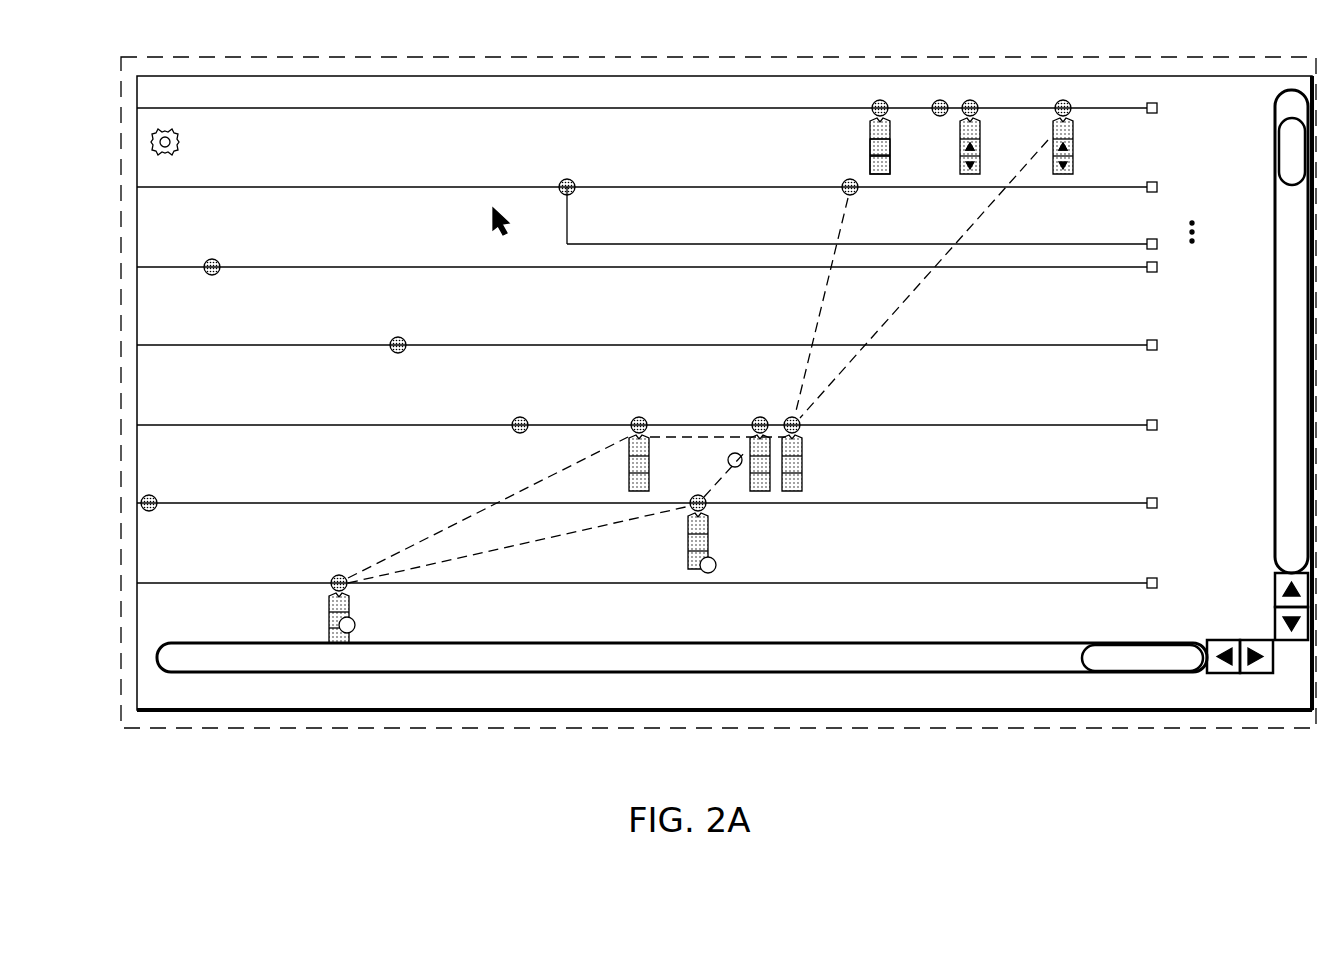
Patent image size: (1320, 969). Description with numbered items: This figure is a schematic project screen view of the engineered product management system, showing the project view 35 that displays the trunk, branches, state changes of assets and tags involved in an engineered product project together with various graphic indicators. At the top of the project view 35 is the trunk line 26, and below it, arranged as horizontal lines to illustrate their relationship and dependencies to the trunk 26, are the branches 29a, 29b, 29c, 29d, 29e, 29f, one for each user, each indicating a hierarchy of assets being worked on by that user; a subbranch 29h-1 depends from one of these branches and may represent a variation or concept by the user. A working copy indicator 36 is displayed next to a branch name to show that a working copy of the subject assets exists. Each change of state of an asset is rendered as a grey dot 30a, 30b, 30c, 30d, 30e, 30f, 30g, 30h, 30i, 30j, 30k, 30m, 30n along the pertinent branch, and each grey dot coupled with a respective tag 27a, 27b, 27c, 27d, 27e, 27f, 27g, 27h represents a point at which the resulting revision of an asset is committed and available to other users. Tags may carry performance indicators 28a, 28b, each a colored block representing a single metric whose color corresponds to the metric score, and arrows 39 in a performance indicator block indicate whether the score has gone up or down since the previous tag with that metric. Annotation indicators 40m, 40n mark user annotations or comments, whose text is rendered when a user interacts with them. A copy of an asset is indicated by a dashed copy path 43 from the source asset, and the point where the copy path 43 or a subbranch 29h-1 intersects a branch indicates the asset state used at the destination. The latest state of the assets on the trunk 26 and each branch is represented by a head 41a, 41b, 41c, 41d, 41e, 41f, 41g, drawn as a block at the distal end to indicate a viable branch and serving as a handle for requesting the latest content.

The trunk 26 is at (137, 108).
The tag 27a is at (869, 124).
The tag 27b is at (960, 126).
The tag 27c is at (1074, 136).
The tag 27d is at (628, 451).
The tag 27e is at (749, 444).
The tag 27f is at (803, 442).
The tag 27g is at (687, 527).
The tag 27h is at (328, 606).
The performance indicator 28a is at (869, 150).
The performance indicator 28b is at (891, 163).
The branch 29a is at (137, 187).
The branch 29b is at (137, 267).
The branch 29c is at (137, 345).
The branch 29d is at (137, 425).
The branch 29e is at (137, 503).
The branch 29f is at (137, 583).
The subbranch 29h-1 is at (858, 214).
The state change 30a is at (880, 99).
The state change 30b is at (940, 99).
The state change 30c is at (971, 99).
The state change 30d is at (1063, 99).
The state change 30e is at (219, 261).
The state change 30f is at (393, 339).
The state change 30g is at (513, 419).
The state change 30h is at (632, 419).
The state change 30i is at (753, 419).
The state change 30j is at (844, 194).
The state change 30k is at (801, 422).
The state change 30m is at (707, 508).
The state change 30n is at (332, 577).
The project view 35 is at (495, 44).
The working copy indicator 36 is at (166, 130).
The arrow 39 is at (1052, 152).
The annotation indicator 40m is at (717, 564).
The annotation indicator 40n is at (356, 624).
The head 41a is at (1158, 108).
The head 41b is at (1158, 187).
The head 41c is at (1158, 267).
The head 41d is at (1158, 345).
The head 41e is at (1158, 425).
The head 41f is at (1158, 503).
The head 41g is at (1158, 583).
The copy path 43 is at (820, 308).